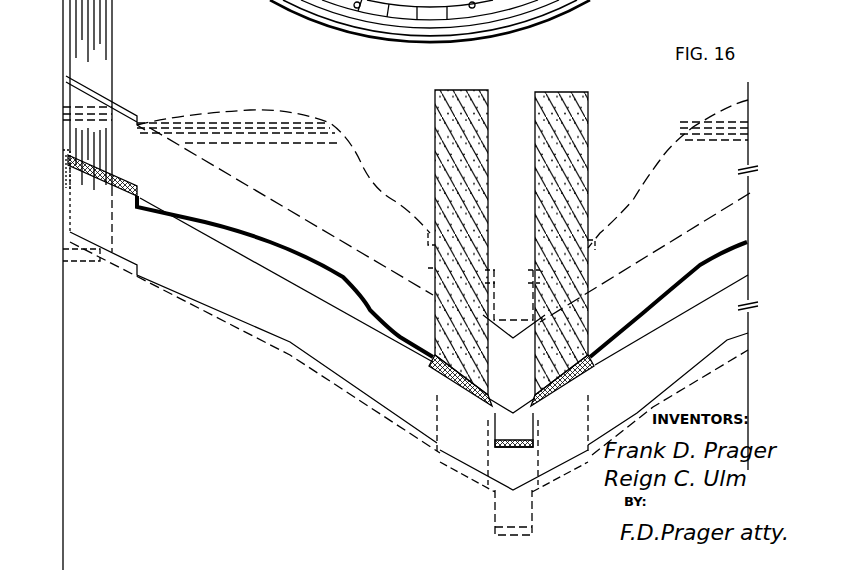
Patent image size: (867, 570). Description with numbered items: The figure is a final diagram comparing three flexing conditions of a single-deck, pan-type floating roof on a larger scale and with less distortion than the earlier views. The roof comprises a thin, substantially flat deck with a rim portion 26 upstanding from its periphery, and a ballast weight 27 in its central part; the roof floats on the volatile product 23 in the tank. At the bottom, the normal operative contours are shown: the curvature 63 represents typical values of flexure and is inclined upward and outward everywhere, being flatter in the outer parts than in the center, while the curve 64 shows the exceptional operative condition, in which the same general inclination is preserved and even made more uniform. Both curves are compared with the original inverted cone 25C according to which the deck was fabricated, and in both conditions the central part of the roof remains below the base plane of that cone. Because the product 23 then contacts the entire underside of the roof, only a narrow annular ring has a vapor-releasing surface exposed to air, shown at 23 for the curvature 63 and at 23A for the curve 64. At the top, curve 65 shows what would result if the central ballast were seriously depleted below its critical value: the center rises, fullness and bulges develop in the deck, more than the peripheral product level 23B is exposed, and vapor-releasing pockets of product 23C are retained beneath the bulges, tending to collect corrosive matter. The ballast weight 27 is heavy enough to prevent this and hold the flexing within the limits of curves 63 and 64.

The rim portion 26 is at (118, 51).
The peripheral product level 23B is at (78, 98).
The vapor-releasing pockets of product 23C is at (275, 127).
The curve of depleted-ballast condition 65 is at (368, 163).
The ballast weight 27 is at (589, 127).
The volatile liquid or product 23 is at (70, 148).
The exposed annular product surface 23A is at (70, 172).
The curvature of normal operative condition 63 is at (268, 245).
The inverted cone 25C is at (325, 303).
The curve of exceptional operative condition 64 is at (272, 338).